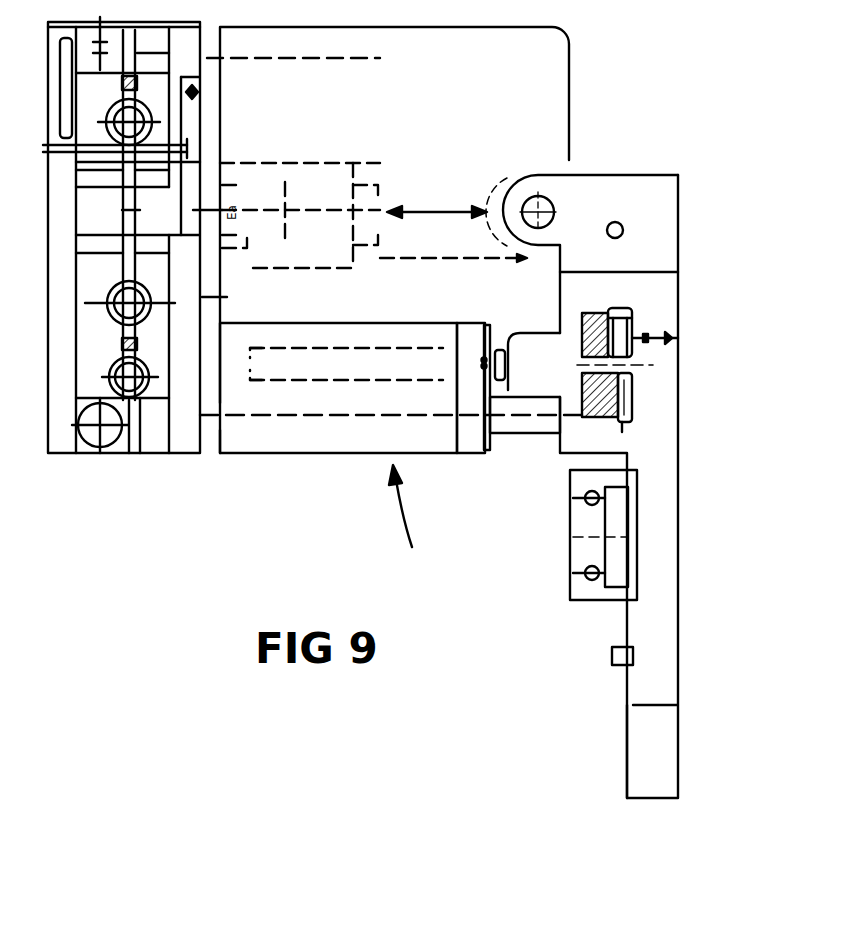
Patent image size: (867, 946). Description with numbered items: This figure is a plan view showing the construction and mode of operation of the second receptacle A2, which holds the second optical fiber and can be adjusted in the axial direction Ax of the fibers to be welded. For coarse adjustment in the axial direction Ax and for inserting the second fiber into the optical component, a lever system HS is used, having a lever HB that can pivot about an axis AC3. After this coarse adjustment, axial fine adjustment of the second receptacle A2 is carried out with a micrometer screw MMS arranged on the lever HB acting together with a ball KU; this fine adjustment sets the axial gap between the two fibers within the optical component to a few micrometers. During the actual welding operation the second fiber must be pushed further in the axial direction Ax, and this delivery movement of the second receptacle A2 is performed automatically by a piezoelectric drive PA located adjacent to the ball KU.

The axial direction Ax is at (435, 210).
The axis AC3 is at (618, 222).
The ball KU is at (481, 362).
The micrometer screw MMS is at (640, 325).
The piezoelectric drive PA is at (297, 380).
The second receptacle A2 is at (413, 522).
The lever system HS is at (593, 632).
The lever HB is at (665, 663).